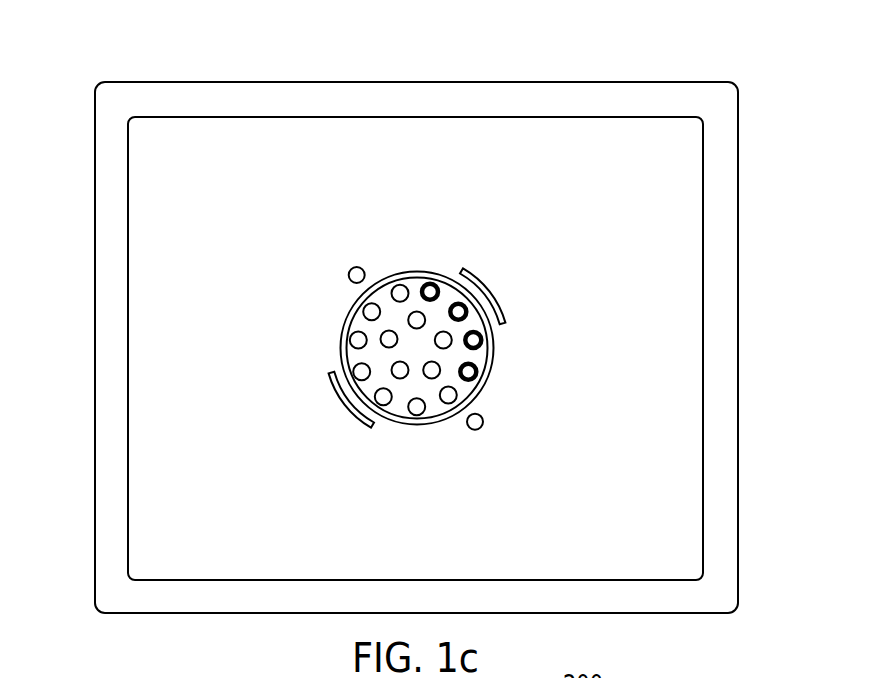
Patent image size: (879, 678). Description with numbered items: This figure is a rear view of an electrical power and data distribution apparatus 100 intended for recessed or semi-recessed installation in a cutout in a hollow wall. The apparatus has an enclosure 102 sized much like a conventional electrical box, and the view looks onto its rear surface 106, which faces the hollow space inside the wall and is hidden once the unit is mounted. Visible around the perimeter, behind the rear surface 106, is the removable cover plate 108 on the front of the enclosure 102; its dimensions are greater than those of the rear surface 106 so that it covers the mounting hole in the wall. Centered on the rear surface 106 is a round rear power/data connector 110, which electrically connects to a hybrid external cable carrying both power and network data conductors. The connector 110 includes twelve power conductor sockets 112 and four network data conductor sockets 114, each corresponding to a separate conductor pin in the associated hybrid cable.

The distribution apparatus 100 is at (453, 310).
The enclosure 102 is at (363, 348).
The rear surface 106 is at (140, 348).
The cover plate 108 is at (728, 347).
The rear power/data connector 110 is at (415, 272).
The power conductor sockets 112 is at (417, 408).
The network data conductor sockets 114 is at (432, 291).